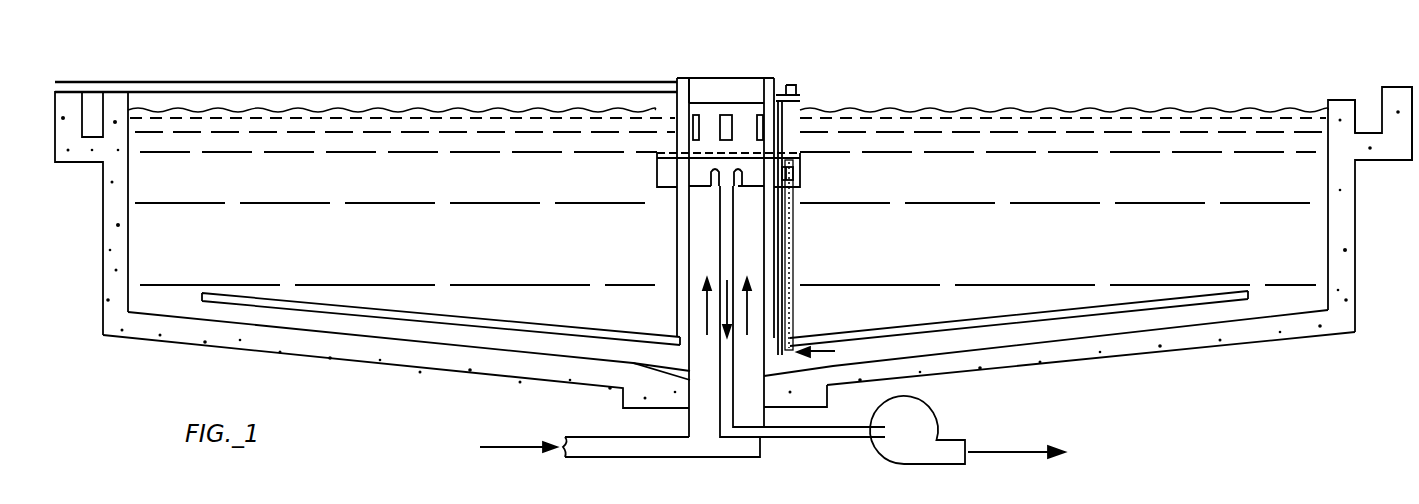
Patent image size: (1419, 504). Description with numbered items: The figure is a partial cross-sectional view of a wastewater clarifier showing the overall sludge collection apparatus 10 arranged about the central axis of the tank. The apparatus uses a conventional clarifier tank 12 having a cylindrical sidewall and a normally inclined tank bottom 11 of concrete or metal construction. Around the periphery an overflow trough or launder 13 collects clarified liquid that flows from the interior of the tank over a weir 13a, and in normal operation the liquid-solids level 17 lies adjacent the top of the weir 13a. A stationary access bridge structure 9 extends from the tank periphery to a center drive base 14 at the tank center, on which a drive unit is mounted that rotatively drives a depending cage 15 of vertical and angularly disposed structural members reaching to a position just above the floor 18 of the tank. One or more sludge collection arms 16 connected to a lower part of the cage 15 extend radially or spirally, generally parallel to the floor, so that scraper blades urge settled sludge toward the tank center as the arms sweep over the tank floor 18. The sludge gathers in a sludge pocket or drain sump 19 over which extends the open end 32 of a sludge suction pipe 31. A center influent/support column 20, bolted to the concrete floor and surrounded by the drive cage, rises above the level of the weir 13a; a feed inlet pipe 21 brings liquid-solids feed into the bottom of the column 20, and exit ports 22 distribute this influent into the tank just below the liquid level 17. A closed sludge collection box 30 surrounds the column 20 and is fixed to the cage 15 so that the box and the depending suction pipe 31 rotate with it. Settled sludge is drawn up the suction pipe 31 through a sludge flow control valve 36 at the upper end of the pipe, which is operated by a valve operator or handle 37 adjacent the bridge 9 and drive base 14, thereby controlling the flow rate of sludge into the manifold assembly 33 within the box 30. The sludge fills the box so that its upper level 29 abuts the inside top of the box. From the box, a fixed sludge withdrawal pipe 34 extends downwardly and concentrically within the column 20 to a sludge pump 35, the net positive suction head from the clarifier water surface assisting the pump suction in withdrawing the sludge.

The access bridge structure 9 is at (423, 82).
The apparatus 10 is at (733, 235).
The tank bottom 11 is at (1287, 338).
The clarifier tank 12 is at (1357, 220).
The overflow trough or launder 13 is at (1412, 87).
The weir 13a is at (1341, 99).
The center drive base 14 is at (728, 78).
The cage 15 is at (680, 98).
The sludge collection arm 16 is at (873, 329).
The liquid-solids level 17 is at (930, 108).
The floor 18 is at (1014, 340).
The sludge pocket or drain sump 19 is at (623, 382).
The center influent/support column 20 is at (689, 233).
The feed inlet pipe 21 is at (593, 437).
The exit ports 22 is at (729, 116).
The upper level of the sludge 29 is at (660, 155).
The sludge collection box 30 is at (657, 177).
The sludge suction pipe 31 is at (793, 238).
The open end of suction pipe 32 is at (790, 372).
The manifold assembly 33 is at (712, 152).
The sludge withdrawal pipe 34 is at (733, 265).
The sludge pump 35 is at (935, 416).
The sludge flow control valve 36 is at (796, 181).
The valve operator or handle 37 is at (797, 93).